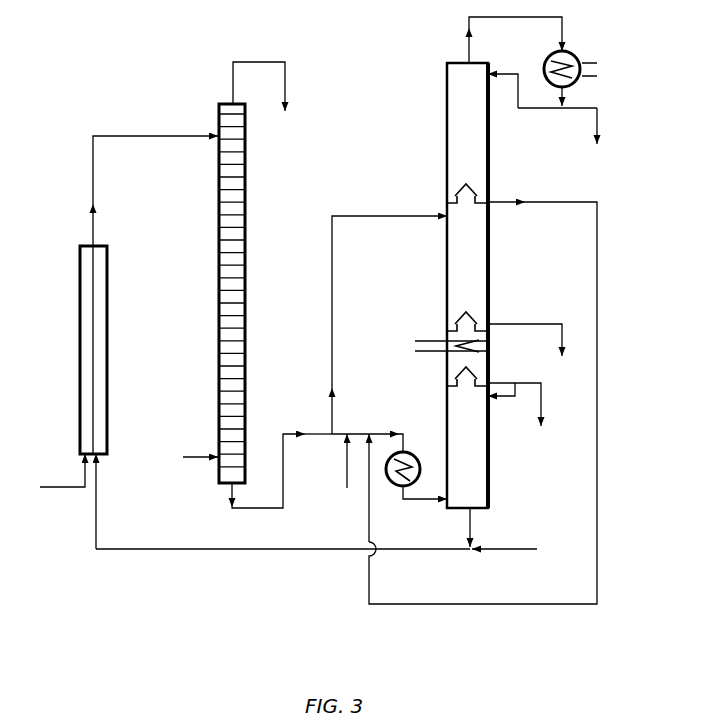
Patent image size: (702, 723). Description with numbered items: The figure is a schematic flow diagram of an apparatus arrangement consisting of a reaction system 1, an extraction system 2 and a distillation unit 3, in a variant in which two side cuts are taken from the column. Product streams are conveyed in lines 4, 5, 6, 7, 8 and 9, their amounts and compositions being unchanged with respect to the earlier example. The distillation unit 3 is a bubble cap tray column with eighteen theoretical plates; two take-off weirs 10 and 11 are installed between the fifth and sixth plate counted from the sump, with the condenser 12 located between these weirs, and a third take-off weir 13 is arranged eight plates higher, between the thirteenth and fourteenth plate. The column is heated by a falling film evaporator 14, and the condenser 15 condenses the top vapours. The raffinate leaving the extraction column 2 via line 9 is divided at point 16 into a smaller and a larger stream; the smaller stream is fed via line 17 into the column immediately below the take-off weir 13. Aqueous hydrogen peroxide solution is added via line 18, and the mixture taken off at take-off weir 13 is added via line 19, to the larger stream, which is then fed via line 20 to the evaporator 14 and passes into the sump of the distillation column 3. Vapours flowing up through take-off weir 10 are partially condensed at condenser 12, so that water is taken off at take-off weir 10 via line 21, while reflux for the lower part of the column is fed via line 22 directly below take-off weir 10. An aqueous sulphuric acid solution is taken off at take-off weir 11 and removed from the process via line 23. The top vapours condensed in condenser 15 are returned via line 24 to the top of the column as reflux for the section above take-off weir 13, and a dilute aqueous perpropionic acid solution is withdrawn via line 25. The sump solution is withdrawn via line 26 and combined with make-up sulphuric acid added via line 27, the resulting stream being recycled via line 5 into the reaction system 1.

The reaction system 1 is at (90, 300).
The extraction system 2 is at (222, 312).
The distillation unit 3 is at (447, 110).
The product stream line 4 is at (68, 486).
The recycle line 5 is at (142, 548).
The product stream line 6 is at (93, 162).
The product stream line 7 is at (206, 456).
The product stream line 8 is at (286, 84).
The raffinate line 9 is at (271, 507).
The take-off weir 10 is at (453, 383).
The take-off weir 11 is at (453, 325).
The condenser 12 is at (489, 346).
The take-off weir 13 is at (453, 197).
The falling film evaporator 14 is at (412, 456).
The condenser 15 is at (575, 56).
The dividing point 16 is at (332, 433).
The feed line 17 is at (332, 302).
The hydrogen peroxide feed line 18 is at (346, 477).
The take-off return line 19 is at (369, 519).
The evaporator feed line 20 is at (387, 433).
The water take-off line 21 is at (542, 398).
The reflux line 22 is at (509, 397).
The sulphuric acid removal line 23 is at (527, 323).
The top reflux line 24 is at (523, 107).
The perpropionic acid withdrawal line 25 is at (597, 123).
The sump withdrawal line 26 is at (473, 525).
The sulphuric acid make-up line 27 is at (528, 548).